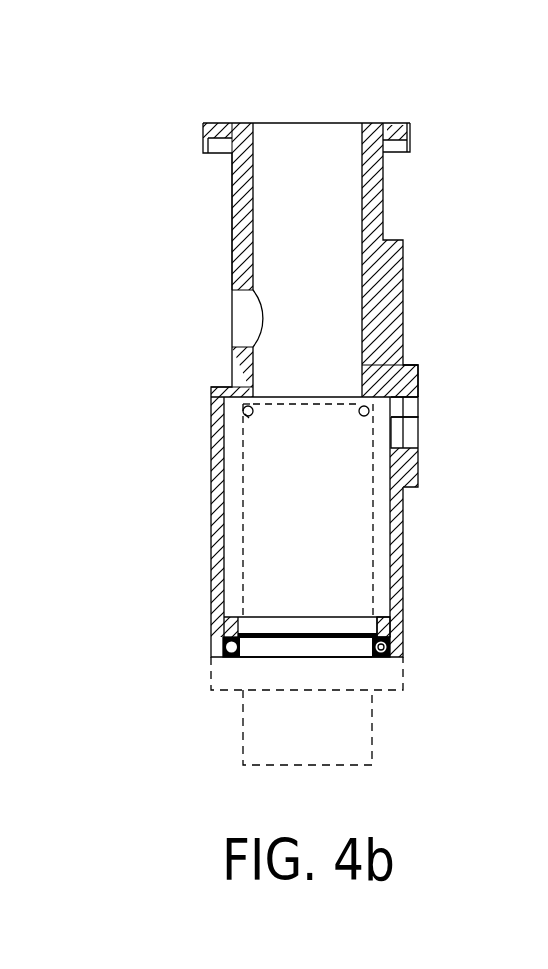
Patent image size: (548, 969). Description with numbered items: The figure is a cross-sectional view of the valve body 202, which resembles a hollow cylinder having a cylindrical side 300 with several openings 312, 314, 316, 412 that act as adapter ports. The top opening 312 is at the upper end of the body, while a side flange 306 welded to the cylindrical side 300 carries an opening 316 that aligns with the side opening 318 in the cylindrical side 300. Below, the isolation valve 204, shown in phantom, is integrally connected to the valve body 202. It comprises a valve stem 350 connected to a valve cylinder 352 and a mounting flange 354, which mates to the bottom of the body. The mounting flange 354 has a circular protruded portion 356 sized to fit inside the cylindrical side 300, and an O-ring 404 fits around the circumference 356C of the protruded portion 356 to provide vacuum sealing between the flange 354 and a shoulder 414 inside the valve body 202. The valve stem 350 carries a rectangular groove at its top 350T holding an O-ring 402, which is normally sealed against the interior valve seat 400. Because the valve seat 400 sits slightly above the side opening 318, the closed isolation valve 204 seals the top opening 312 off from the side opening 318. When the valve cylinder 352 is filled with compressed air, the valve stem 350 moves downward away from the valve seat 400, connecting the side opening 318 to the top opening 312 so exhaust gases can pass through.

The valve body 202 is at (462, 176).
The isolation valve 204 is at (135, 722).
The cylindrical side 300 is at (395, 280).
The side flange 306 is at (410, 385).
The top opening 312 is at (302, 143).
The opening 314 is at (262, 633).
The opening 316 is at (405, 435).
The side opening 318 is at (397, 415).
The valve stem 350 is at (262, 534).
The top of valve stem 350T is at (281, 398).
The valve cylinder 352 is at (262, 752).
The mounting flange 354 is at (215, 677).
The protruded portion 356 is at (353, 648).
The circumference of protruded portion 356C is at (373, 657).
The interior valve seat 400 is at (243, 410).
The O-ring 402 is at (245, 418).
The O-ring 404 is at (398, 649).
The opening 412 is at (236, 302).
The shoulder 414 is at (383, 627).